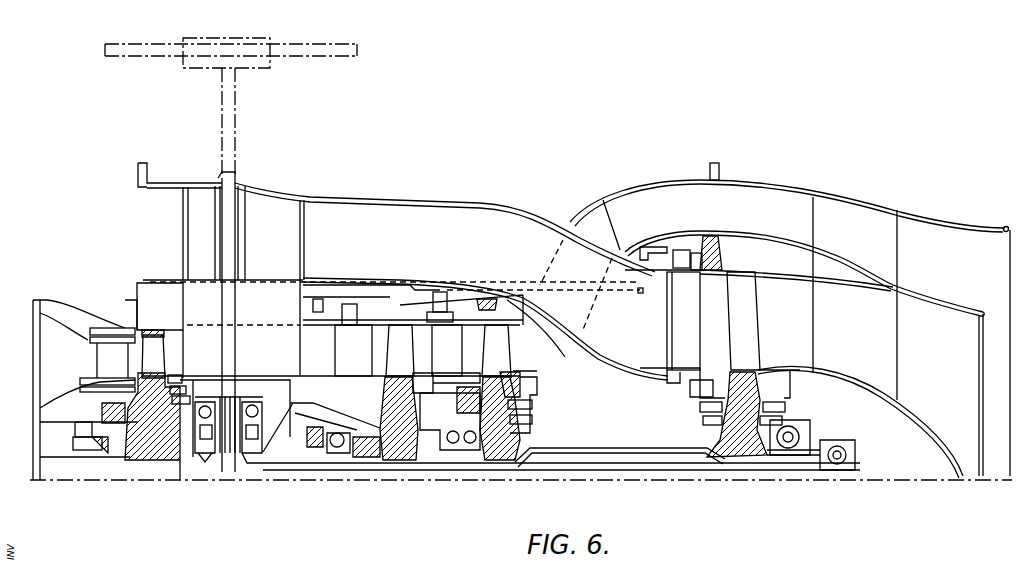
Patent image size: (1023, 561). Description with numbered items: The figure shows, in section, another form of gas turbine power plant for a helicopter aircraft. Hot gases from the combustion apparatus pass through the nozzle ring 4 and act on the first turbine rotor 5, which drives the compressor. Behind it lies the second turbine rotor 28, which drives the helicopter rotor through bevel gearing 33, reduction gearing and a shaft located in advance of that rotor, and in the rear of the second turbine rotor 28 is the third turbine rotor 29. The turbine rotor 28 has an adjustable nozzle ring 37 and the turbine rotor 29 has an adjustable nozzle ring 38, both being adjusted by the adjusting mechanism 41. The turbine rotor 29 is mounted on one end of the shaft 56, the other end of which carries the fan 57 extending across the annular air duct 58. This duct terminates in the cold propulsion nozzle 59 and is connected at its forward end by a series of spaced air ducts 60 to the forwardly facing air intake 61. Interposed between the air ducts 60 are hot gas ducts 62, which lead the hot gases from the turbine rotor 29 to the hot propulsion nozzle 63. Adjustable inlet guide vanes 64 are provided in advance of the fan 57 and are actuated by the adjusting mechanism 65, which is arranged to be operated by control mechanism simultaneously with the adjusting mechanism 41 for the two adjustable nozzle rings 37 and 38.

The nozzle ring 4 is at (105, 365).
The first turbine rotor 5 is at (158, 367).
The second turbine rotor 28 is at (411, 362).
The third turbine rotor 29 is at (507, 362).
The bevel gearing 33 is at (252, 445).
The adjustable nozzle ring 37 is at (363, 362).
The adjustable nozzle ring 38 is at (458, 362).
The adjusting mechanism 41 is at (368, 284).
The shaft 56 is at (604, 452).
The fan 57 is at (749, 334).
The annular air duct 58 is at (641, 332).
The cold propulsion nozzle 59 is at (982, 376).
The air ducts 60 is at (473, 251).
The air intake 61 is at (160, 248).
The hot gas ducts 62 is at (719, 219).
The hot propulsion nozzle 63 is at (1008, 270).
The adjustable inlet guide vanes 64 is at (698, 334).
The adjusting mechanism 65 is at (651, 247).